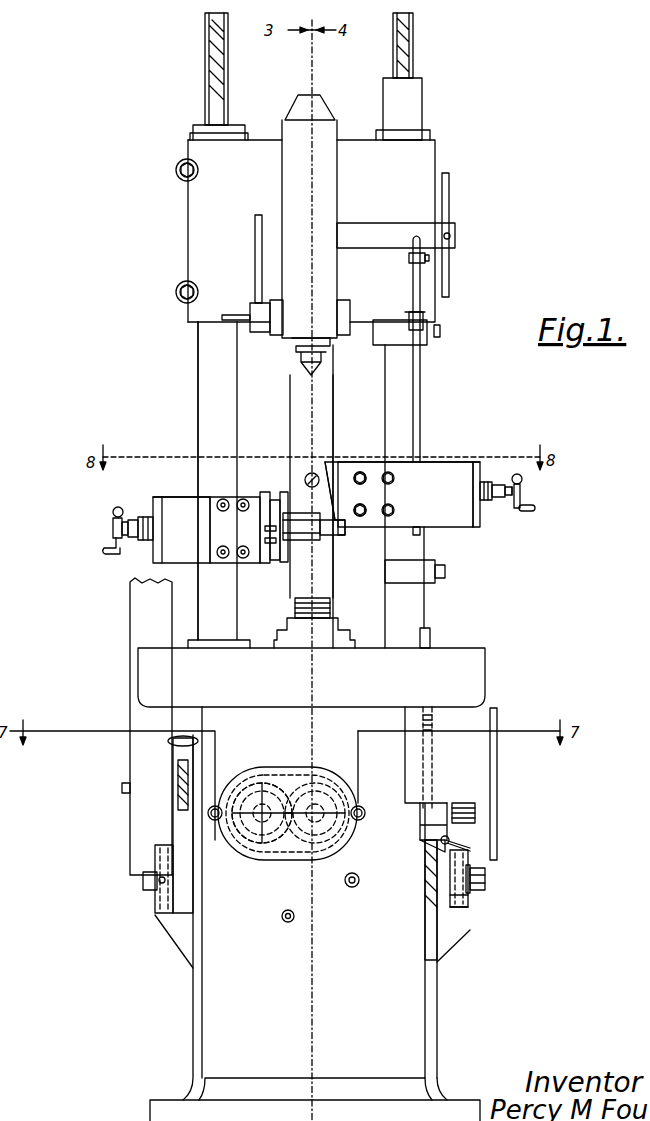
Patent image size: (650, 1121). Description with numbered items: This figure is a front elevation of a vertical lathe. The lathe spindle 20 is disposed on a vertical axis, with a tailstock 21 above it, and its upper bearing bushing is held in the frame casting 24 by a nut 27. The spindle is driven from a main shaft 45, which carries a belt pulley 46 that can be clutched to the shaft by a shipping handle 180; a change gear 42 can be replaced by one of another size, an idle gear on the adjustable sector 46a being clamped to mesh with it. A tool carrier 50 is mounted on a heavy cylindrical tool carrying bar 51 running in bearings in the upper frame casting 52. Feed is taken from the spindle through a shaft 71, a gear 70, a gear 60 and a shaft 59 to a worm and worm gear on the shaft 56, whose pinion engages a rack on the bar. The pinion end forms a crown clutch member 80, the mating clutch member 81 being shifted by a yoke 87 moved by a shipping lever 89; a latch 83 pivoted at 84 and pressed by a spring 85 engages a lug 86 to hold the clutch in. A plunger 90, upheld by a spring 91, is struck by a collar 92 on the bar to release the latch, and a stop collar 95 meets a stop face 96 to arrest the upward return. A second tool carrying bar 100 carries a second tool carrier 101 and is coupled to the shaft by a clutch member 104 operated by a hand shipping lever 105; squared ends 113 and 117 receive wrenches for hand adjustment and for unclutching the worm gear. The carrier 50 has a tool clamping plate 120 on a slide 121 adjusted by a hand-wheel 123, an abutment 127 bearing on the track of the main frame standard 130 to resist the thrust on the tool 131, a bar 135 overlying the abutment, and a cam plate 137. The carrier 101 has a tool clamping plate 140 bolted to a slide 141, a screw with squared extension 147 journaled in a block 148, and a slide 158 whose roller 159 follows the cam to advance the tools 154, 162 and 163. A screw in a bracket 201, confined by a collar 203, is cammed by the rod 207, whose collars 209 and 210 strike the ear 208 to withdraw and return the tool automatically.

The lathe spindle 20 is at (330, 609).
The tailstock 21 is at (290, 257).
The frame casting 24 is at (256, 650).
The nut 27 is at (340, 636).
The gear 42 is at (478, 808).
The main shaft 45 is at (122, 786).
The belt pulley 46 is at (128, 815).
The sector 46a is at (447, 810).
The tool carrier 50 is at (425, 459).
The tool carrying bar 51 is at (388, 384).
The upper frame casting 52 is at (415, 148).
The shaft 56 is at (486, 882).
The shaft 59 is at (262, 800).
The gear 60 is at (258, 843).
The gear 70 is at (355, 786).
The shaft 71 is at (311, 822).
The crown clutch member 80 is at (440, 895).
The clutch member 81 is at (468, 893).
The latch 83 is at (470, 848).
The pivot 84 is at (450, 838).
The spring 85 is at (425, 845).
The lug 86 is at (470, 852).
The yoke 87 is at (470, 908).
The shipping lever 89 is at (486, 874).
The plunger 90 is at (430, 632).
The spring 91 is at (433, 700).
The collar 92 is at (433, 565).
The stop collar 95 is at (380, 333).
The stop face 96 is at (411, 317).
The second tool carrying bar 100 is at (205, 405).
The second tool carrier 101 is at (243, 498).
The clutch member 104 is at (172, 885).
The hand shipping lever 105 is at (158, 880).
The squared end 113 is at (355, 887).
The squared end 117 is at (283, 920).
The tool clamping plate 120 is at (397, 481).
The slide 121 is at (460, 518).
The hand-wheel 123 is at (528, 497).
The abutment 127 is at (344, 504).
The main frame standard 130 is at (240, 352).
The tool 131 is at (343, 518).
The bar 135 is at (300, 380).
The cam plate 137 is at (338, 466).
The tool clamping plate 140 is at (210, 538).
The slide 141 is at (171, 498).
The squared extension 147 is at (115, 528).
The block 148 is at (150, 515).
The tool 154 is at (270, 520).
The slide 158 is at (328, 538).
The roller 159 is at (345, 534).
The tool 162 is at (266, 528).
The tool 163 is at (266, 540).
The shipping handle 180 is at (170, 741).
The bracket 201 is at (497, 500).
The collar 203 is at (497, 482).
The rod 207 is at (421, 388).
The ear 208 is at (424, 316).
The collar 209 is at (409, 258).
The collar 210 is at (440, 335).